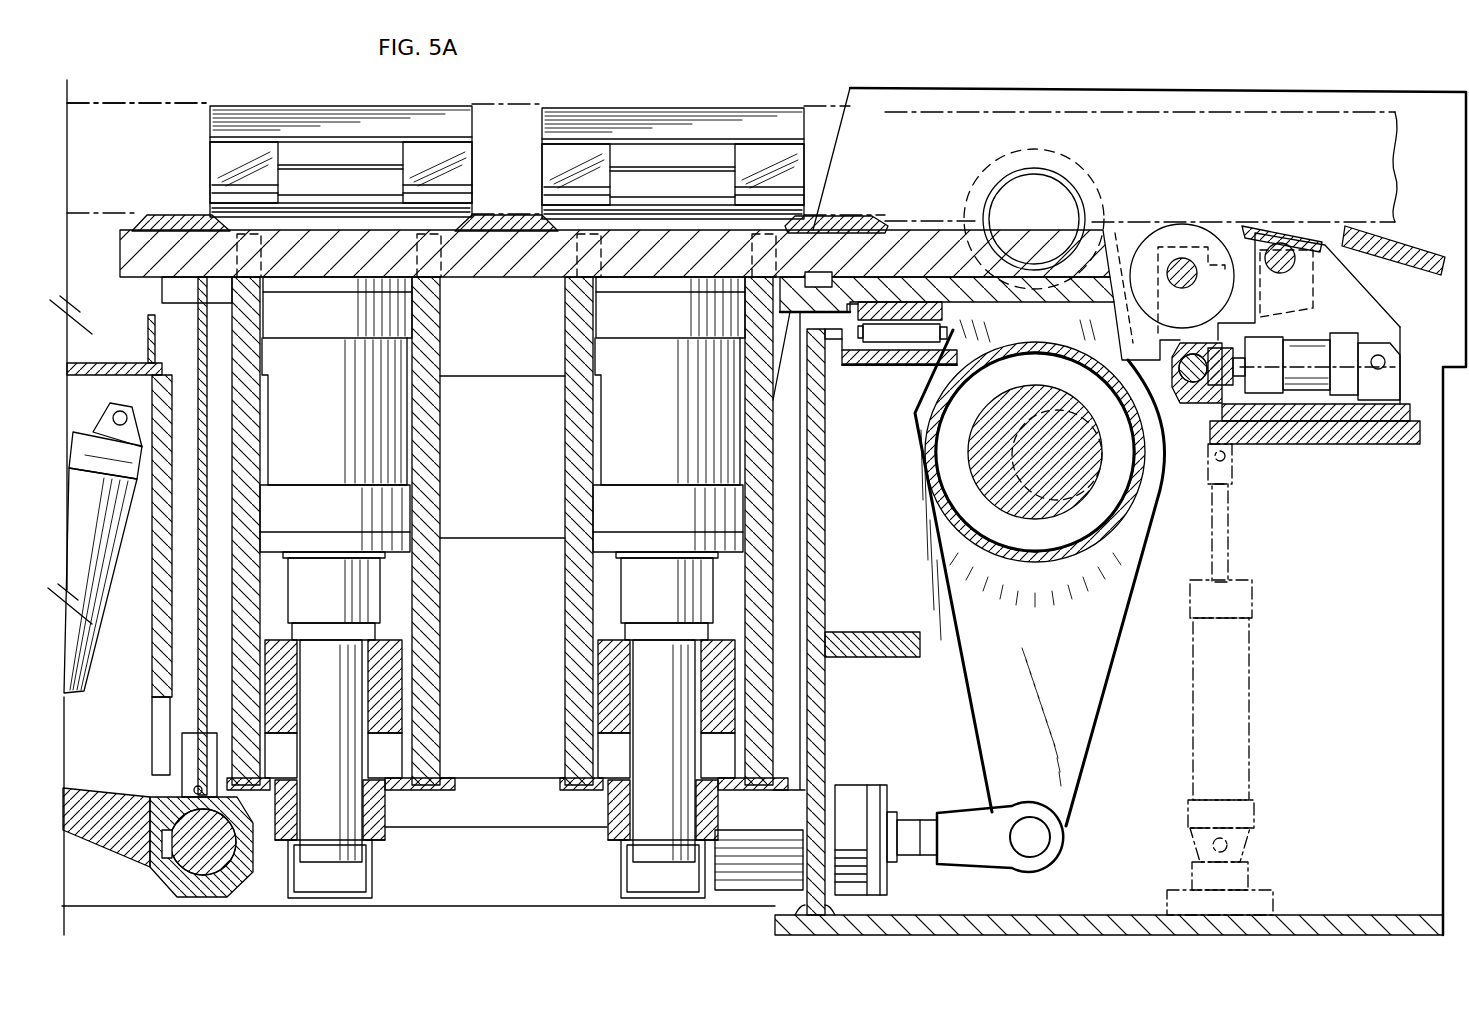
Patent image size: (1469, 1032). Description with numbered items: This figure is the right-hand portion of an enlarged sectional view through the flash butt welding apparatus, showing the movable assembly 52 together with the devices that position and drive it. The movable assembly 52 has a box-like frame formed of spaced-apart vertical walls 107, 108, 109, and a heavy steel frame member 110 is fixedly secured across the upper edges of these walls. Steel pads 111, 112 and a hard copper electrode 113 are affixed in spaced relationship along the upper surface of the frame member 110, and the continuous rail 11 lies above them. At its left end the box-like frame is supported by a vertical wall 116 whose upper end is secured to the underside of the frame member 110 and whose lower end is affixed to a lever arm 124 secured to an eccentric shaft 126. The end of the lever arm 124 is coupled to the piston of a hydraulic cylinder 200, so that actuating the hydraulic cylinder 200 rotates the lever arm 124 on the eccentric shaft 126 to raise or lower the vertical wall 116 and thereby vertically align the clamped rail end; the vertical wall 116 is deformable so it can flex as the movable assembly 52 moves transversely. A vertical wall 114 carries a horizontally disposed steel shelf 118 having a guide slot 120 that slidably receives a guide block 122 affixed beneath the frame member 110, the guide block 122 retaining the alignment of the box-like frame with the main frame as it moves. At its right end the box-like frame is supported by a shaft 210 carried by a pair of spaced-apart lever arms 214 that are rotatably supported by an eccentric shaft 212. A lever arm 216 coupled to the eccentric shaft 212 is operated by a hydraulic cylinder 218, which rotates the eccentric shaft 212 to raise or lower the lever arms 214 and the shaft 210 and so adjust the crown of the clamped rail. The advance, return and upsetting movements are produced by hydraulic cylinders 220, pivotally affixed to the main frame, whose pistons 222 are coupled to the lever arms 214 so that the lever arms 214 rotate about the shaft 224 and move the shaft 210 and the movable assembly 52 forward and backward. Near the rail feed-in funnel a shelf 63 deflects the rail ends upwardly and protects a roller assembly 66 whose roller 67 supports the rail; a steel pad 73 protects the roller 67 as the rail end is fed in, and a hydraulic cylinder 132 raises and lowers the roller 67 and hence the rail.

The continuous rail 11 is at (150, 106).
The movable assembly 52 is at (507, 455).
The shelf 63 is at (1412, 250).
The roller assembly 66 is at (1243, 212).
The roller 67 is at (1172, 230).
The steel pad 73 is at (1288, 224).
The vertical wall 107 is at (425, 655).
The vertical wall 108 is at (578, 690).
The vertical wall 109 is at (760, 705).
The frame member 110 is at (500, 274).
The steel pad 111 is at (868, 216).
The steel pad 112 is at (503, 214).
The hard copper electrode 113 is at (158, 214).
The vertical wall 114 is at (825, 568).
The vertical wall 116 is at (198, 657).
The steel shelf 118 is at (893, 348).
The guide slot 120 is at (852, 366).
The guide block 122 is at (895, 340).
The lever arm 124 is at (125, 808).
The eccentric shaft 126 is at (214, 860).
The hydraulic cylinder 132 is at (1305, 380).
The hydraulic cylinder 200 is at (108, 570).
The shaft 210 is at (1058, 190).
The eccentric shaft 212 is at (1062, 520).
The lever arms 214 is at (1085, 663).
The lever arm 216 is at (1197, 482).
The hydraulic cylinder 218 is at (1240, 652).
The hydraulic cylinders 220 is at (860, 792).
The pistons 222 is at (966, 828).
The shaft 224 is at (995, 462).